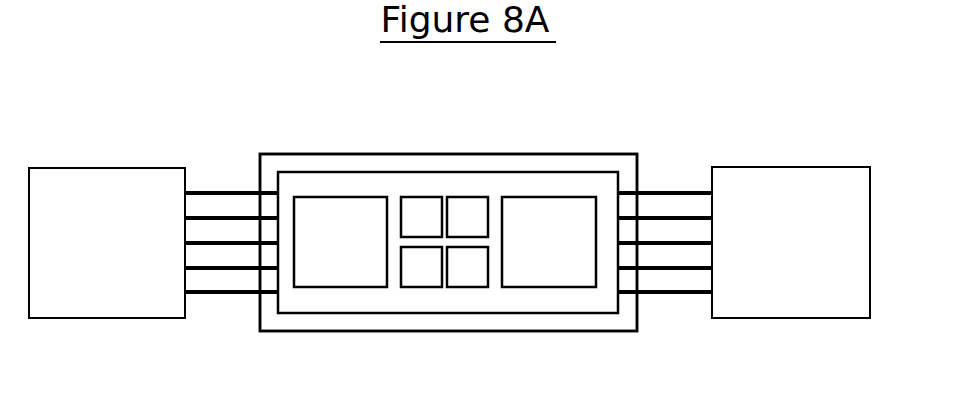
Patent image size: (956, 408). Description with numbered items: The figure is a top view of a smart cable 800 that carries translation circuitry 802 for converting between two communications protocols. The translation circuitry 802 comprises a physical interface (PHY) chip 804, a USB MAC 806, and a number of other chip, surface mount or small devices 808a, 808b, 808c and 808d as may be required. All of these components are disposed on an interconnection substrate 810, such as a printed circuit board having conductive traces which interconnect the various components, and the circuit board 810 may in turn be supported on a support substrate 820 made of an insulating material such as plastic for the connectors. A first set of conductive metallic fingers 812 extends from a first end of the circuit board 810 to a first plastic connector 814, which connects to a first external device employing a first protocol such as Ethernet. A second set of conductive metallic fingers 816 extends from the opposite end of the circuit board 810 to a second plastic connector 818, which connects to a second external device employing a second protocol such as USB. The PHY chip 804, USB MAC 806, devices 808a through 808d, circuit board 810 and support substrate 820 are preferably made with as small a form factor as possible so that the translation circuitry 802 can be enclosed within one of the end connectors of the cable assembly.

The cable 800 is at (151, 90).
The translation circuitry 802 is at (459, 119).
The physical interface (PHY) chip 804 is at (348, 287).
The USB MAC 806 is at (565, 287).
The chip, surface mount or small device 808a is at (424, 197).
The chip, surface mount or small device 808b is at (470, 197).
The chip, surface mount or small device 808c is at (424, 287).
The chip, surface mount or small device 808d is at (470, 287).
The interconnection substrate 810 is at (453, 313).
The first set of conductive fingers 812 is at (233, 293).
The first plastic connector 814 is at (93, 318).
The second set of conductive fingers 816 is at (670, 293).
The second plastic connector 818 is at (808, 318).
The support substrate 820 is at (549, 331).